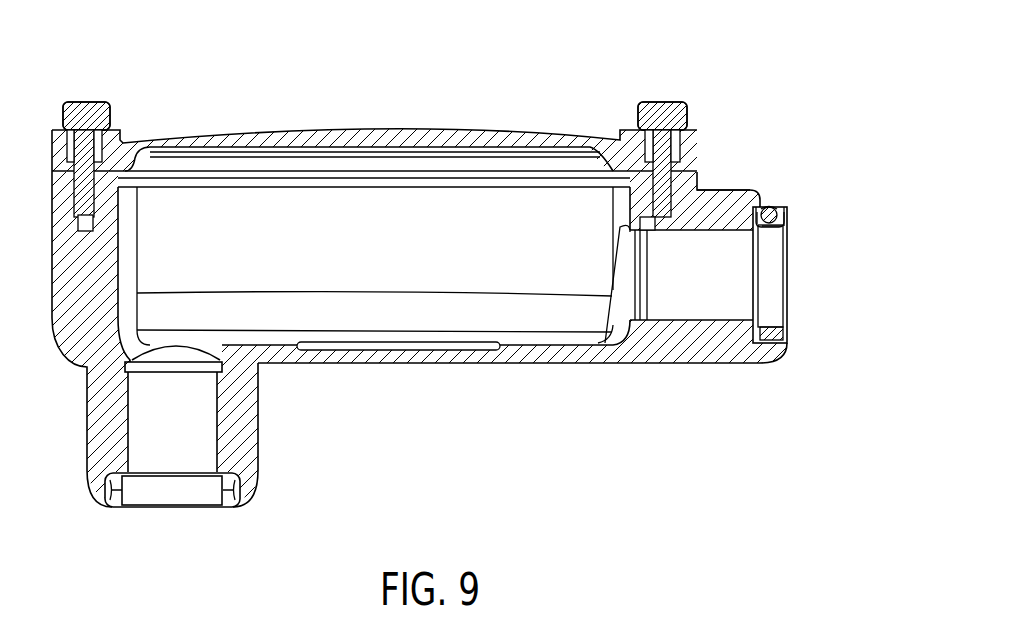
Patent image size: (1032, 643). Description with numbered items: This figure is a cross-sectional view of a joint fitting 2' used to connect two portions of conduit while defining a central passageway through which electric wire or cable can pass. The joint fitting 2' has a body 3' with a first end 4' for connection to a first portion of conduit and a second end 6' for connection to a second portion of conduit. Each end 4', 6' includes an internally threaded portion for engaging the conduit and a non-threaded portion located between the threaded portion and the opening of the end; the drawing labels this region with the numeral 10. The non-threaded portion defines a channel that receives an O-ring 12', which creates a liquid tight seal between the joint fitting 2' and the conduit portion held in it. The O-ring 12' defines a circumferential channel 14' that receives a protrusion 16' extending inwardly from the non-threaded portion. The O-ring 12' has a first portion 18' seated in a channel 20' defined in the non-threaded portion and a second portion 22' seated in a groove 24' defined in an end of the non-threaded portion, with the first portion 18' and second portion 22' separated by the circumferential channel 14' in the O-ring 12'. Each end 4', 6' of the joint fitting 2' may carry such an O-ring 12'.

The joint fitting 2' is at (374, 124).
The body 3' is at (383, 213).
The first end 4' is at (761, 253).
The second end 6' is at (172, 540).
The spout ring 10 is at (805, 291).
The O-ring 12' is at (815, 345).
The circumferential channel 14' is at (801, 182).
The protrusion 16' is at (788, 179).
The first portion 18' is at (773, 177).
The channel 20' is at (744, 181).
The second portion 22' is at (817, 232).
The groove 24' is at (809, 203).